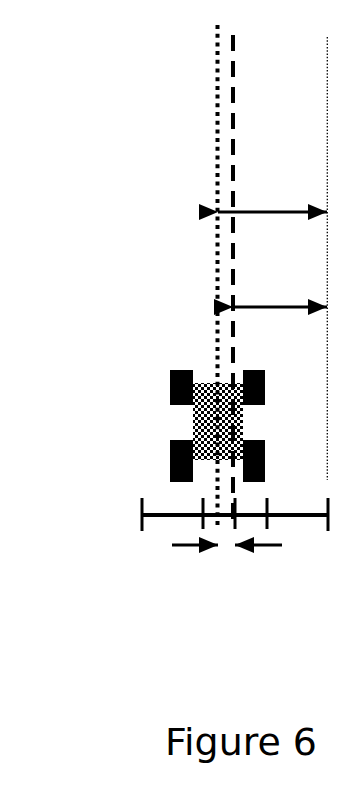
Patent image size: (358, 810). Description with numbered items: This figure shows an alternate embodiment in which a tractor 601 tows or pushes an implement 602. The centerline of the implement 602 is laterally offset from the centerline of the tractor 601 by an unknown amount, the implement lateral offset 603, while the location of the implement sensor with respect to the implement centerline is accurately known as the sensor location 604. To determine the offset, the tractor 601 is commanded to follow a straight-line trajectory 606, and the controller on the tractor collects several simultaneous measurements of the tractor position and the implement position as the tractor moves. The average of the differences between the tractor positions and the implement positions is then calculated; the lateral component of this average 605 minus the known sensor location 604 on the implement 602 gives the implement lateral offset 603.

The tractor 601 is at (213, 420).
The implement 602 is at (143, 513).
The implement lateral offset 603 is at (252, 558).
The implement sensor location 604 is at (280, 282).
The lateral component of the average difference 605 is at (272, 188).
The straight-line trajectory 606 is at (218, 245).